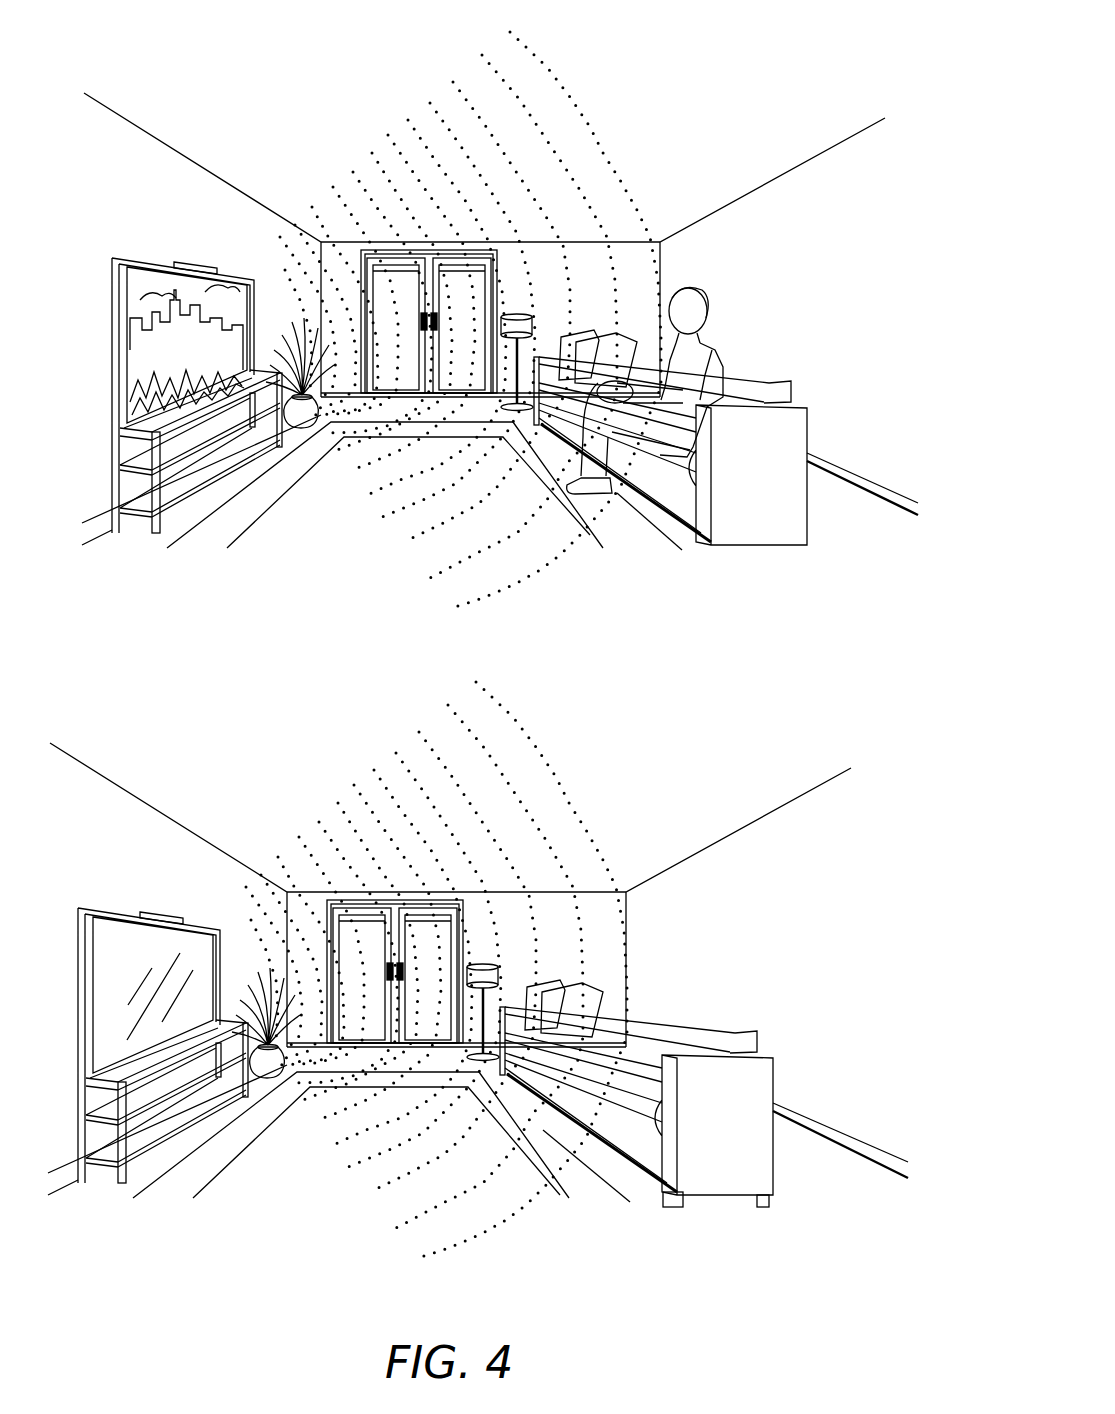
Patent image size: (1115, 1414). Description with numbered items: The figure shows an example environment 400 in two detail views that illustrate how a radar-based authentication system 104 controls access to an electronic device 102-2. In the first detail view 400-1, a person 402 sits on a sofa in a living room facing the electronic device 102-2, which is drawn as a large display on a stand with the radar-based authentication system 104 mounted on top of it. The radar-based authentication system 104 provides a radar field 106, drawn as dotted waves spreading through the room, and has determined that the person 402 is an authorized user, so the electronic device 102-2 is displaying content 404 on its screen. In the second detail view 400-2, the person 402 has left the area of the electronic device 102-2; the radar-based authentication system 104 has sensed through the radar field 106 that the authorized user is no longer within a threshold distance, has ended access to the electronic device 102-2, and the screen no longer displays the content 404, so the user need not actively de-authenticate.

The example environment 400 is at (883, 21).
The detail view 400-1 is at (328, 622).
The detail view 400-2 is at (328, 1260).
The electronic device 102-2 is at (125, 255).
The radar-based authentication system 104 is at (182, 260).
The radar field 106 is at (616, 150).
The person 402 is at (703, 290).
The content 404 is at (180, 320).